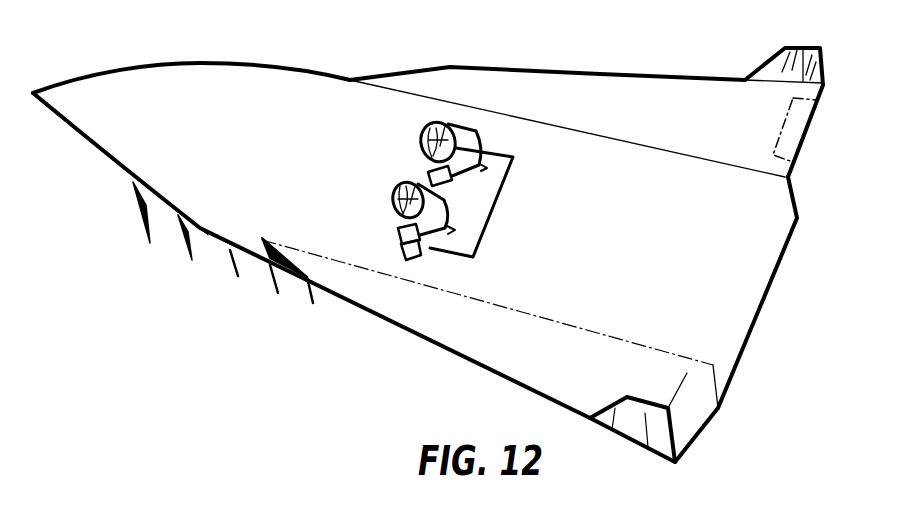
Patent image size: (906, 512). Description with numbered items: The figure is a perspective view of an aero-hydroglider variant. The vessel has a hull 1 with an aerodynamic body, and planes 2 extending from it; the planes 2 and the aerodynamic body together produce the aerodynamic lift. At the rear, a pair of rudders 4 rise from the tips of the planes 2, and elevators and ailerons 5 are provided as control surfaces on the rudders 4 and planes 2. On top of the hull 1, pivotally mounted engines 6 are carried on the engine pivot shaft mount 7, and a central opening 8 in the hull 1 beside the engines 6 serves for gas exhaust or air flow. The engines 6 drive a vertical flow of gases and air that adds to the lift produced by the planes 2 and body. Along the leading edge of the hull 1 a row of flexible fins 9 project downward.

The hull 1 is at (135, 90).
The planes 2 is at (612, 86).
The rudders 4 is at (822, 60).
The elevators and ailerons 5 is at (800, 126).
The pivotally mounted engines 6 is at (430, 134).
The engine pivot shaft mount 7 is at (402, 250).
The central opening 8 is at (490, 196).
The flexible fins 9 is at (136, 206).